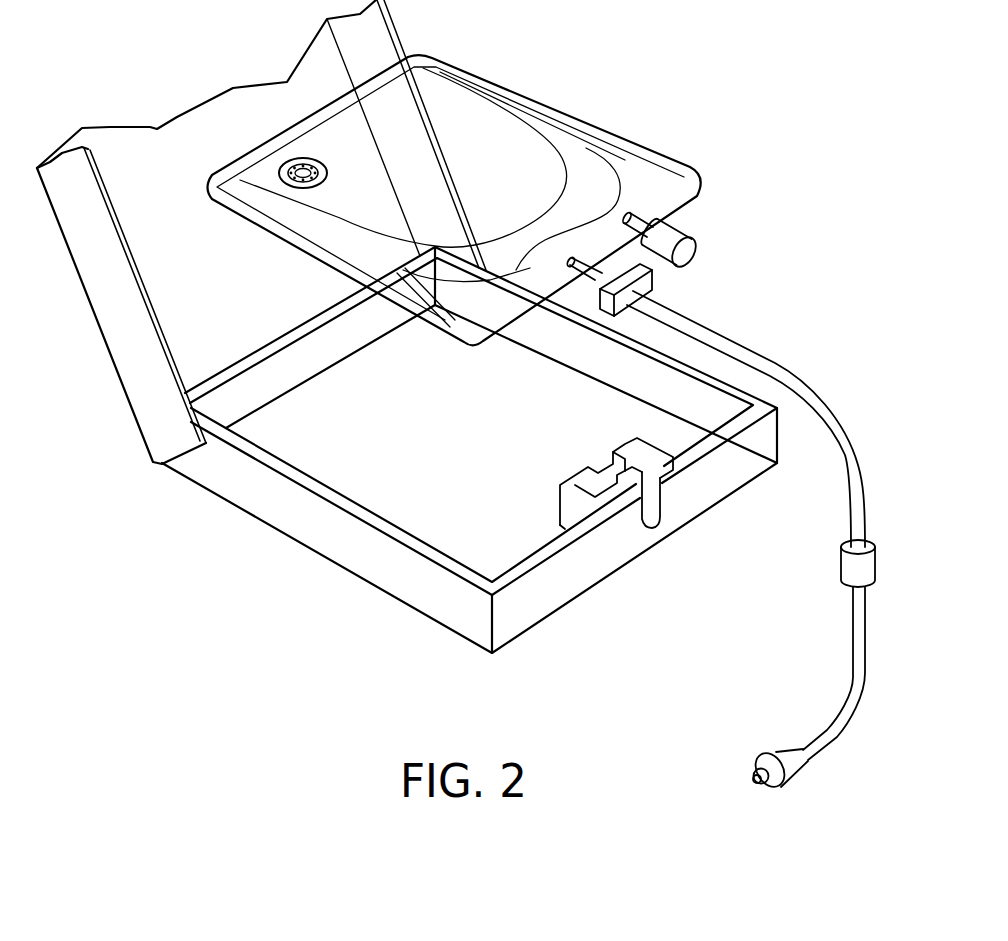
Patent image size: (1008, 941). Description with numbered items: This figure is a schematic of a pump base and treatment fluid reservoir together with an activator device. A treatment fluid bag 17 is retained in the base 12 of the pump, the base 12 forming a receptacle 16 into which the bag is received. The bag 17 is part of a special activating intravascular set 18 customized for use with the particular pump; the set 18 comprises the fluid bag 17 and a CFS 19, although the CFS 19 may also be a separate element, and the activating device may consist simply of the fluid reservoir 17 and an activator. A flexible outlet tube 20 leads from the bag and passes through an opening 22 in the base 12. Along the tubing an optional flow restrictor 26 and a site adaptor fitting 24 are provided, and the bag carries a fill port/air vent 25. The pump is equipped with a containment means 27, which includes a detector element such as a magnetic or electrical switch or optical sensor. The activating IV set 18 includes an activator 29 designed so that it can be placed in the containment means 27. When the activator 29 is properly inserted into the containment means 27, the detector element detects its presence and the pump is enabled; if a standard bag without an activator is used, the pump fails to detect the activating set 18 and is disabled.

The base 12 is at (420, 596).
The receptacle 16 is at (357, 490).
The treatment fluid bag 17 is at (568, 106).
The intravascular set 18 is at (484, 191).
The CFS 19 is at (761, 527).
The flexible outlet tube 20 is at (843, 423).
The opening 22 is at (663, 517).
The site adaptor fitting 24 is at (780, 753).
The fill port/air vent 25 is at (703, 237).
The flow restrictor 26 is at (840, 572).
The containment means 27 is at (635, 478).
The activator 29 is at (652, 278).